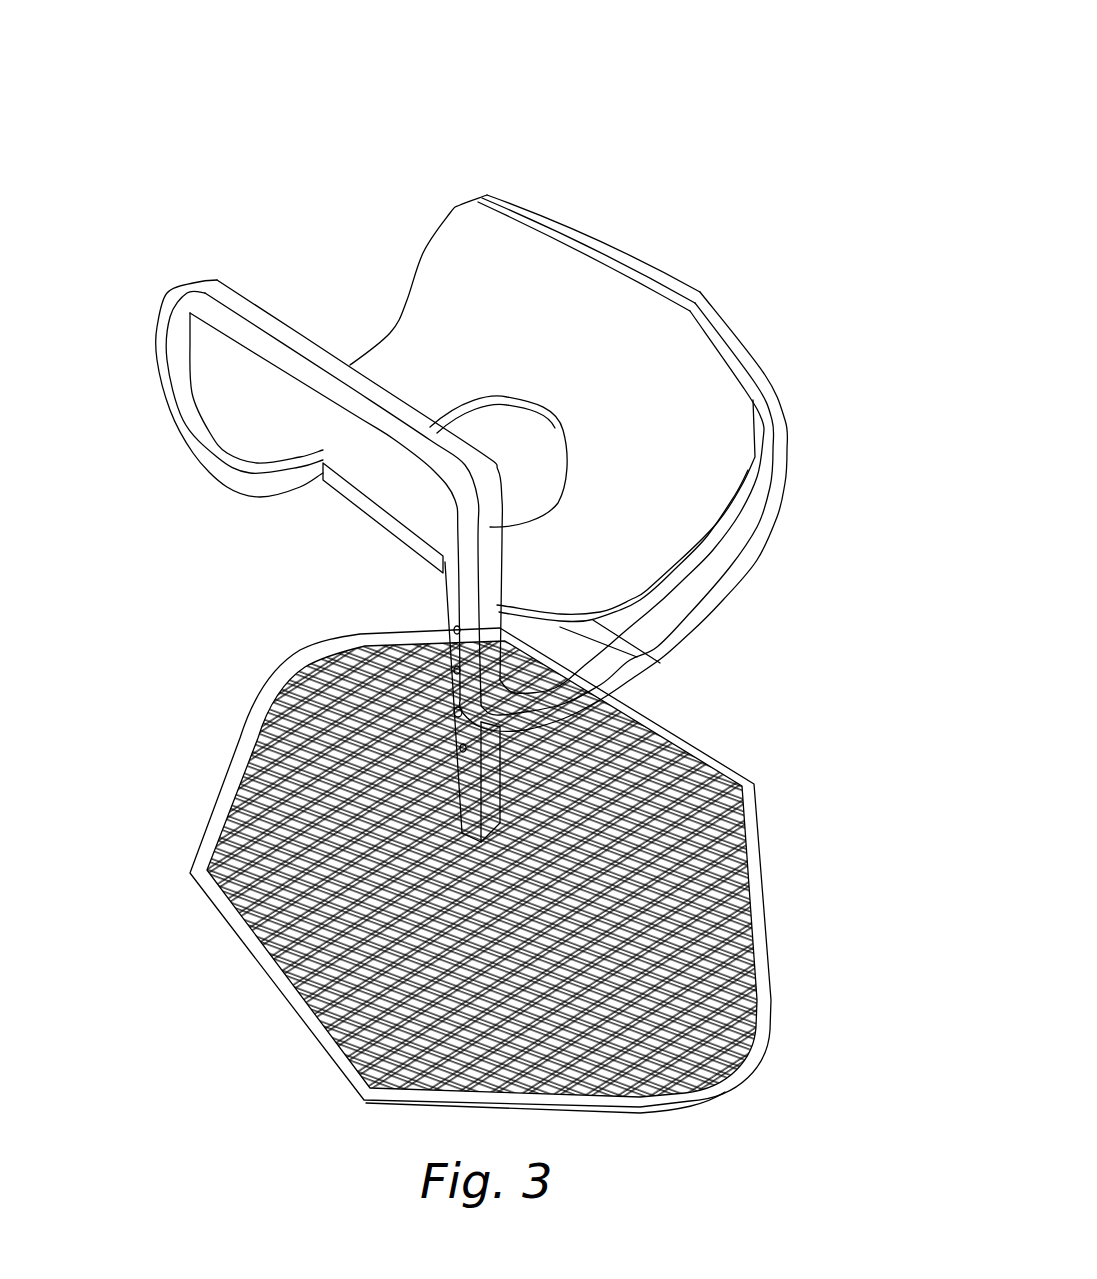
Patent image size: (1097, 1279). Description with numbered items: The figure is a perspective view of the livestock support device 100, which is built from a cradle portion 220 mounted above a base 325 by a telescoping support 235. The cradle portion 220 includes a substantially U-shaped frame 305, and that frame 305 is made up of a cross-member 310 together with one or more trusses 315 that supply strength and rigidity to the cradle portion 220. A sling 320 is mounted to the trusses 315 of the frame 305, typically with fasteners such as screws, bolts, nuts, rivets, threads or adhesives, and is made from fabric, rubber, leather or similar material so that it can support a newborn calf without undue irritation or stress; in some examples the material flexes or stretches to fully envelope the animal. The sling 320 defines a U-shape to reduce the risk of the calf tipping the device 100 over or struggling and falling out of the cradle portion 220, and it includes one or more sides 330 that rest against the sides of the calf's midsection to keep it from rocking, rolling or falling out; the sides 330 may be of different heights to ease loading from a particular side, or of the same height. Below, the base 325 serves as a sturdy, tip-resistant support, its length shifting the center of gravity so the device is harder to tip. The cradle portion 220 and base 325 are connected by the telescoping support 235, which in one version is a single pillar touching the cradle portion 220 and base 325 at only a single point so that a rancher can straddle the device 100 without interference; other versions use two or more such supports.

The livestock support device 100 is at (868, 160).
The cradle portion 220 is at (612, 237).
The telescoping support 235 is at (242, 780).
The frame 305 is at (777, 523).
The cross-member 310 is at (350, 495).
The trusses 315 is at (578, 216).
The sling 320 is at (403, 307).
The base 325 is at (770, 937).
The sides 330 is at (673, 340).